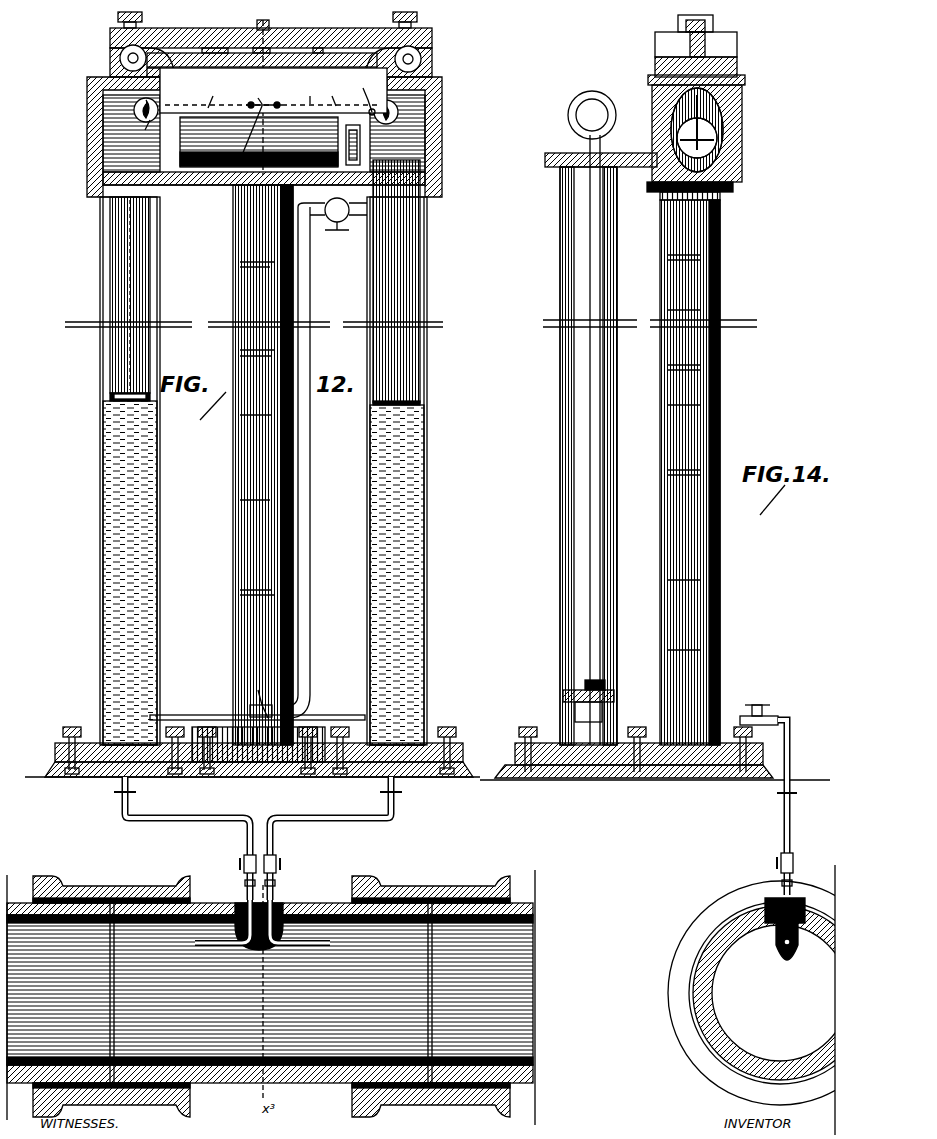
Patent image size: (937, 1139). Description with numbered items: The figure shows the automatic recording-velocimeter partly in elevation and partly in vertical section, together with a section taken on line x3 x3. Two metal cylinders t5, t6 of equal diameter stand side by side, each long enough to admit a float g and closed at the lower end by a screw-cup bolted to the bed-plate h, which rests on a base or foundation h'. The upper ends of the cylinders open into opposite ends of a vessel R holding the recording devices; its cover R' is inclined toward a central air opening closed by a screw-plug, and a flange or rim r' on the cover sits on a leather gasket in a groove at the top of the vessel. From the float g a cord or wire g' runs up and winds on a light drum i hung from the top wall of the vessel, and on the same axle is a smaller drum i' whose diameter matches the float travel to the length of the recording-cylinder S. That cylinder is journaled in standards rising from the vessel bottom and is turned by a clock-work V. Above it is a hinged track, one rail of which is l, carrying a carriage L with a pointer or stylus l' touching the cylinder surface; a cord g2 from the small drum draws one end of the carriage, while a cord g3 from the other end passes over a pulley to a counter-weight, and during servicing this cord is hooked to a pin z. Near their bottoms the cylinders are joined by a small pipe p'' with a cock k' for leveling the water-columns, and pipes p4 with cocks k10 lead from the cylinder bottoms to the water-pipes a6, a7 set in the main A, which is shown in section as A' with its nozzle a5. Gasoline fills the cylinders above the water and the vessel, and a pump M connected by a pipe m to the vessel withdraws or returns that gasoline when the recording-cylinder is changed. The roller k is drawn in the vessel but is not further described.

In FIG. 12, the section line x3 is at (254, 89).
In FIG. 12, the vessel R is at (270, 137).
In FIG. 14, the vessel R is at (702, 142).
In FIG. 12, the cover R' is at (273, 90).
In FIG. 14, the cover R' is at (706, 54).
In FIG. 12, the flange or rim r' is at (171, 75).
In FIG. 14, the flange or rim r' is at (686, 78).
In FIG. 12, the cord g2 is at (216, 94).
In FIG. 12, the cord g3 is at (334, 93).
In FIG. 12, the carriage L is at (272, 95).
In FIG. 12, the rail l is at (310, 92).
In FIG. 12, the pointer or stylus l' is at (258, 92).
In FIG. 12, the pin z is at (367, 93).
In FIG. 12, the roller k is at (146, 110).
In FIG. 12, the light drum i is at (147, 129).
In FIG. 12, the smaller drum i' is at (249, 133).
In FIG. 12, the recording-cylinder S is at (259, 142).
In FIG. 12, the clock-work V is at (360, 140).
In FIG. 12, the pump M is at (263, 465).
In FIG. 14, the pump M is at (595, 418).
In FIG. 12, the pipe m is at (306, 445).
In FIG. 12, the metal cylinder t5 is at (136, 471).
In FIG. 12, the metal cylinder t6 is at (388, 452).
In FIG. 14, the metal cylinder t6 is at (662, 450).
In FIG. 12, the cord or wire g' is at (145, 295).
In FIG. 12, the float g is at (114, 396).
In FIG. 12, the small pipe p'' is at (257, 704).
In FIG. 12, the cock k' is at (260, 696).
In FIG. 12, the bed-plate h is at (254, 750).
In FIG. 14, the bed-plate h is at (622, 749).
In FIG. 12, the base or foundation h' is at (246, 766).
In FIG. 14, the base or foundation h' is at (628, 768).
In FIG. 12, the pipe p4 is at (258, 838).
In FIG. 14, the pipe p4 is at (768, 800).
In FIG. 12, the cock k10 is at (263, 870).
In FIG. 14, the cock k10 is at (795, 860).
In FIG. 12, the main A is at (271, 997).
In FIG. 12, the water-pipe a6 is at (222, 932).
In FIG. 12, the water-pipe a7 is at (300, 932).
In FIG. 14, the main pipe section A' is at (780, 1000).
In FIG. 14, the nozzle a5 is at (780, 950).